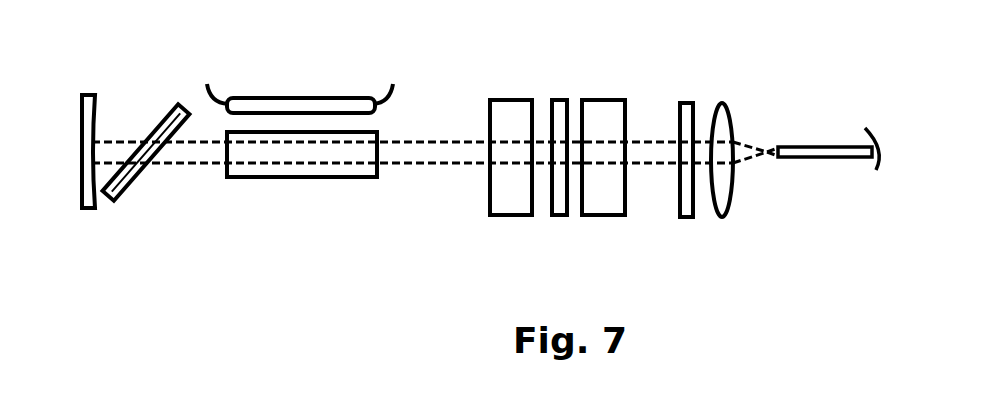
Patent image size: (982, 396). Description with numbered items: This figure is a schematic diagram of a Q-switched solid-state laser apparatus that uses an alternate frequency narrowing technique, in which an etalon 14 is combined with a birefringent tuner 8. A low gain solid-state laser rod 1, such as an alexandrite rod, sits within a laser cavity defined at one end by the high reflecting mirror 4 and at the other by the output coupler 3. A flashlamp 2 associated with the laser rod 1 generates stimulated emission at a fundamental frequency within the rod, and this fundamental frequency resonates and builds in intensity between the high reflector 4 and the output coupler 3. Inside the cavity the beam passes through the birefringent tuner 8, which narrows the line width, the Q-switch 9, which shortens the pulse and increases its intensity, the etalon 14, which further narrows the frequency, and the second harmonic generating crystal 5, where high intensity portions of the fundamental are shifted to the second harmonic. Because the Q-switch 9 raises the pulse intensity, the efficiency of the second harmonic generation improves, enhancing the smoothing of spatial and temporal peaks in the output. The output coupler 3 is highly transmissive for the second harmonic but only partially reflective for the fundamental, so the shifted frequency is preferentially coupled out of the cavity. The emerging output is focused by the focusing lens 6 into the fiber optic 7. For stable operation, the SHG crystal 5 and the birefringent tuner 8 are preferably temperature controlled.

The laser rod 1 is at (325, 178).
The flashlamp 2 is at (313, 98).
The output coupler 3 is at (687, 103).
The high reflecting mirror 4 is at (80, 115).
The second harmonic generating crystal 5 is at (620, 100).
The focusing lens 6 is at (730, 120).
The fiber optic 7 is at (848, 158).
The birefringent tuner 8 is at (132, 178).
The Q-switch 9 is at (508, 100).
The etalon 14 is at (558, 217).